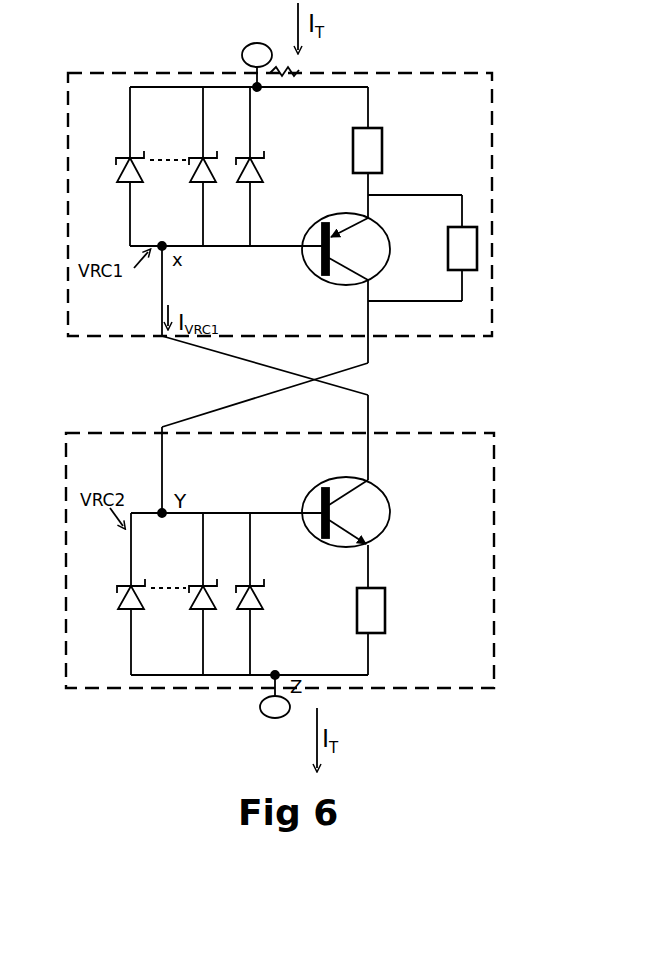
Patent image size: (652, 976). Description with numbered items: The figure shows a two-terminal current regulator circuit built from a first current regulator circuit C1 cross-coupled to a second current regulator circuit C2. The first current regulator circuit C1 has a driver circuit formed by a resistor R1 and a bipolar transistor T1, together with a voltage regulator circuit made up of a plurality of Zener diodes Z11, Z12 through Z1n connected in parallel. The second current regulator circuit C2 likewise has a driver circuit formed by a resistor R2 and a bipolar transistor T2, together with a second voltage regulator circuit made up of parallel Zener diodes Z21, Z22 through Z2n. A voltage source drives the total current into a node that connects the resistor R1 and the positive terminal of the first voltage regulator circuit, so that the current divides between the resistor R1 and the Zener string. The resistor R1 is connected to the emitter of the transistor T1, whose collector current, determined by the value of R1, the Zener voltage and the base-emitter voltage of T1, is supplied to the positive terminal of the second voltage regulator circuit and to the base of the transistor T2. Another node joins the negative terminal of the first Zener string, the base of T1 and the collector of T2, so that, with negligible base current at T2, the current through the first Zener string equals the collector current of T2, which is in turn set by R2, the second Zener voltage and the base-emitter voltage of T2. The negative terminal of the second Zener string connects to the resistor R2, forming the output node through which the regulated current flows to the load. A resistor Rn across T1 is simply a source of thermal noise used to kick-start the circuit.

The first current regulator circuit C1 is at (504, 100).
The second current regulator circuit C2 is at (302, 555).
The Zener diode Z1n is at (142, 166).
The Zener diode Z12 is at (213, 166).
The Zener diode Z11 is at (261, 166).
The Zener diode Z2n is at (143, 594).
The Zener diode Z22 is at (216, 594).
The Zener diode Z21 is at (266, 594).
The resistor R1 is at (385, 141).
The resistor R2 is at (389, 631).
The resistor Rn is at (535, 248).
The bipolar transistor T1 is at (360, 279).
The bipolar transistor T2 is at (367, 529).